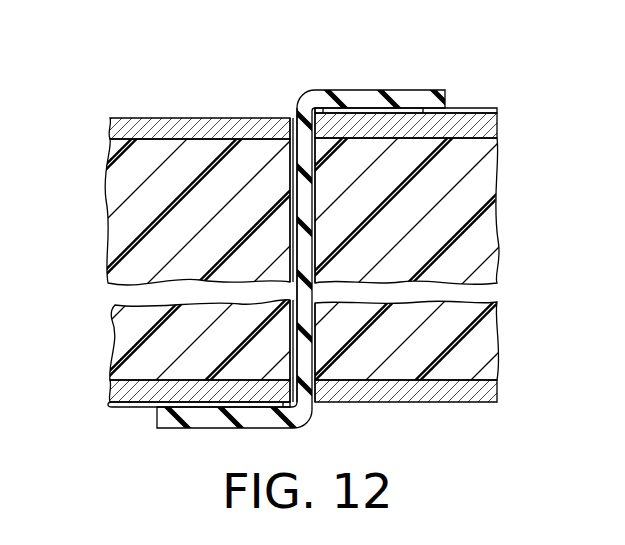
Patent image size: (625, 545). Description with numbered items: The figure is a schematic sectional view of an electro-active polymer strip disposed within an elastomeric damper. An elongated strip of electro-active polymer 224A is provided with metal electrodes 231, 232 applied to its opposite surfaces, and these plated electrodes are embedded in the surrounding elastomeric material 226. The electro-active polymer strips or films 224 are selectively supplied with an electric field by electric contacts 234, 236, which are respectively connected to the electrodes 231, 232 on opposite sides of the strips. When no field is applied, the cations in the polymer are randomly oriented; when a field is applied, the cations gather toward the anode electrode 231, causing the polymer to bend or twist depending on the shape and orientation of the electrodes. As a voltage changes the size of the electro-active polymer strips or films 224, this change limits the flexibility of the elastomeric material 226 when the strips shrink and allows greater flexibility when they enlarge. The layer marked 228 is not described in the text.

The electro-active polymer strip 224 is at (324, 187).
The electro-active polymer 224A is at (292, 120).
The elastomeric material 226 is at (463, 248).
The panel skin sheet 228 is at (157, 127).
The electrode 231 is at (288, 168).
The electrode 232 is at (313, 341).
The electric contact 234 is at (140, 403).
The electric contact 236 is at (462, 114).